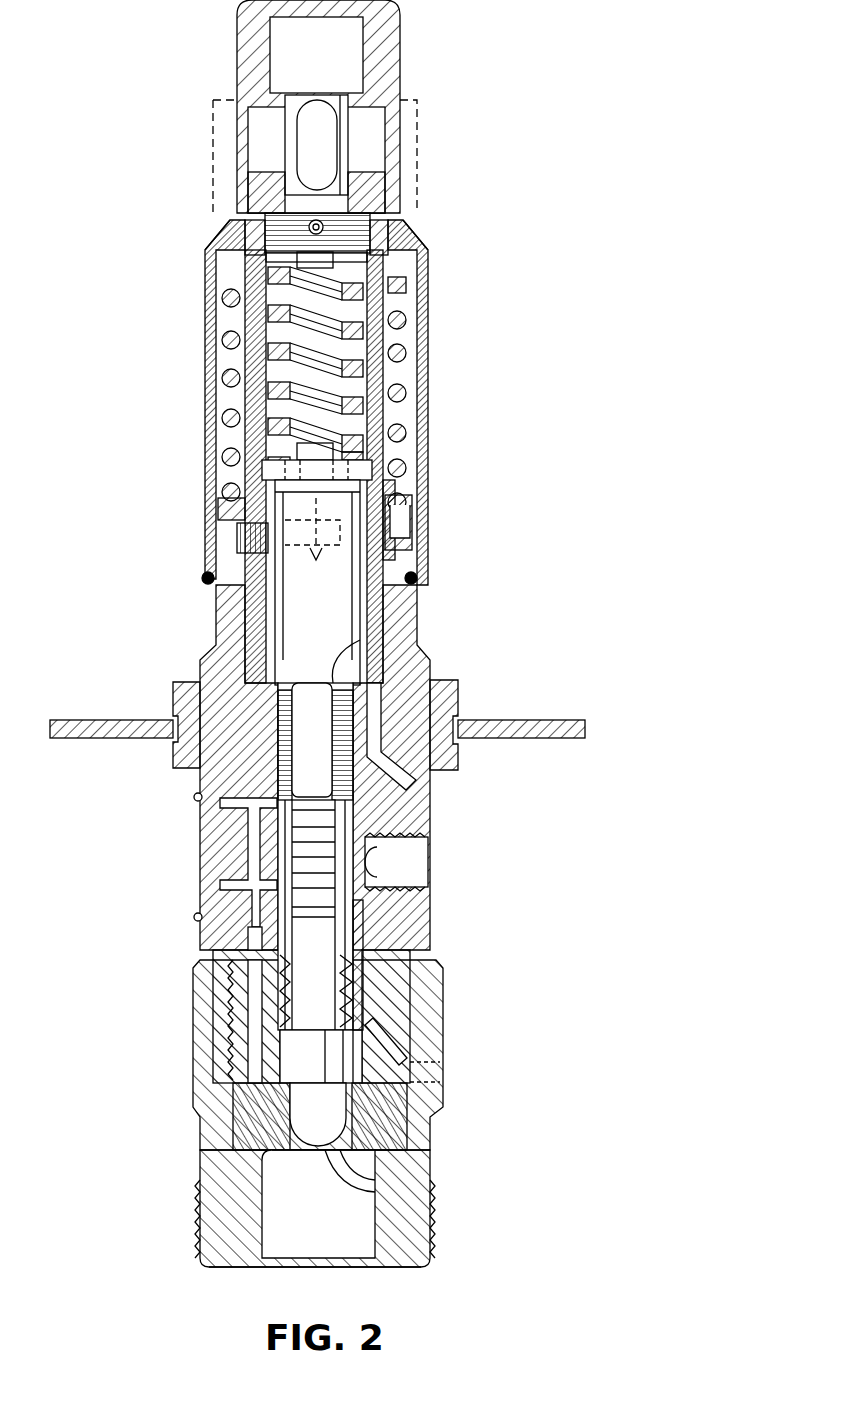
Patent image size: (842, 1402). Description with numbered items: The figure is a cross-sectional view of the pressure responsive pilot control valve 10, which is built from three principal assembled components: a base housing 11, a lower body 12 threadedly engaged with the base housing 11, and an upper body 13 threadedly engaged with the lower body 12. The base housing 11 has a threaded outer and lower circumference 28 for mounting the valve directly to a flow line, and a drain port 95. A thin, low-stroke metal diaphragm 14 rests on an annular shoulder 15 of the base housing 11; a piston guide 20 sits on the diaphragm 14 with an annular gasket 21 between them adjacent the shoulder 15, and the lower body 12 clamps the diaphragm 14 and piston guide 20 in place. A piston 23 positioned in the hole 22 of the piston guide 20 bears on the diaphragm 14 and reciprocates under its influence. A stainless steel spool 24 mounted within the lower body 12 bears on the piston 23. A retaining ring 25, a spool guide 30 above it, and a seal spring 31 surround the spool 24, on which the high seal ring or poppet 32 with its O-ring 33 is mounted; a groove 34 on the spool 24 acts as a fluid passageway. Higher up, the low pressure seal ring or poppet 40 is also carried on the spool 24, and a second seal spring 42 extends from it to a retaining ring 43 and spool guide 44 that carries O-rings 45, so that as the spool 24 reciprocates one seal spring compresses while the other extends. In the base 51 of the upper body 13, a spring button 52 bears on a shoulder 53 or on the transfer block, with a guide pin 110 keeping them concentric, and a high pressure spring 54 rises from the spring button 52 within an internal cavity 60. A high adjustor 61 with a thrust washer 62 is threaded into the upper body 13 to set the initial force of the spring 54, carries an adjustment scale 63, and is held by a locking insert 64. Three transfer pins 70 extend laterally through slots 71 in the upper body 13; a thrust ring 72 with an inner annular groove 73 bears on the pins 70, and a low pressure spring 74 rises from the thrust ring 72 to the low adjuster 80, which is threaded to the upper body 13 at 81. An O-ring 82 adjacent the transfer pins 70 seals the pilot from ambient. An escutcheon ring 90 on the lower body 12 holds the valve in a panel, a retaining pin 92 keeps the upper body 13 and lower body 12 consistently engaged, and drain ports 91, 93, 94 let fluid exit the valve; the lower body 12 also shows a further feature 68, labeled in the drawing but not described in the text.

The pressure responsive pilot control valve 10 is at (138, 305).
The base housing 11 is at (192, 1022).
The lower body 12 is at (412, 680).
The upper body 13 is at (230, 598).
The metal diaphragm 14 is at (415, 1172).
The annular shoulder 15 is at (255, 1148).
The piston guide 20 is at (432, 1115).
The annular gasket 21 is at (405, 1150).
The hole 22 is at (425, 1195).
The piston 23 is at (275, 1125).
The spool 24 is at (330, 938).
The retaining ring 25 is at (415, 1012).
The threaded outer and lower circumference 28 is at (428, 1220).
The spool guide 30 is at (405, 1040).
The seal spring 31 is at (432, 985).
The high seal ring or poppet 32 is at (345, 905).
The O-ring 33 is at (200, 922).
The groove 34 is at (235, 900).
The low pressure seal ring or poppet 40 is at (340, 795).
The second seal spring 42 is at (205, 778).
The retaining ring 43 is at (262, 700).
The spool guide 44 is at (350, 652).
The O-rings 45 is at (285, 730).
The base 51 is at (372, 500).
The spring button 52 is at (380, 446).
The shoulder 53 is at (260, 462).
The high pressure spring 54 is at (398, 290).
The internal cavity 60 is at (424, 338).
The high adjustor 61 is at (338, 152).
The thrust washer 62 is at (406, 242).
The adjustment scale 63 is at (330, 128).
The locking insert 64 is at (372, 208).
The port 68 is at (410, 815).
The transfer pins 70 is at (222, 540).
The slots 71 is at (228, 512).
The thrust ring 72 is at (414, 513).
The inner annular groove 73 is at (406, 535).
The low pressure spring 74 is at (400, 382).
The low adjuster 80 is at (426, 312).
The threaded engagement 81 is at (225, 232).
The O-ring 82 is at (204, 576).
The escutcheon ring 90 is at (458, 690).
The drain port 91 is at (414, 570).
The retaining pin 92 is at (395, 610).
The second drain port 93 is at (440, 765).
The third drain port 94 is at (440, 1075).
The drain port 95 is at (200, 1080).
The guide pin 110 is at (342, 548).